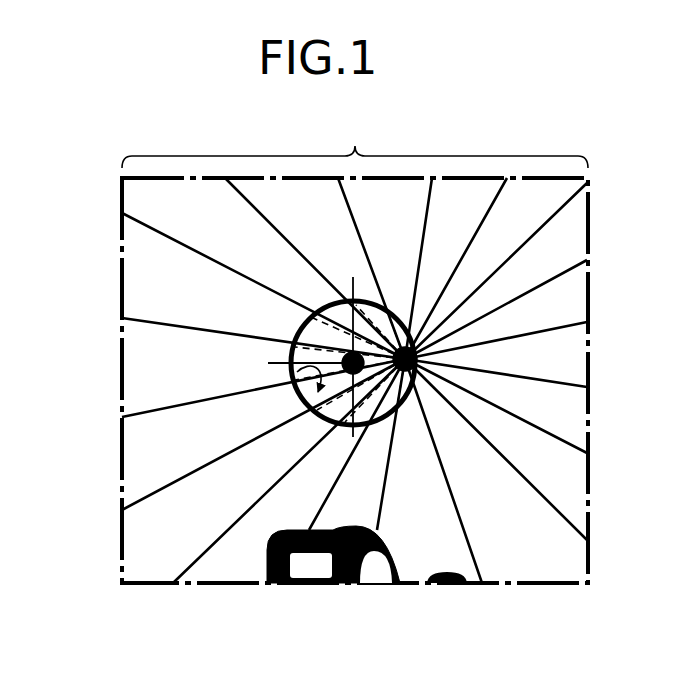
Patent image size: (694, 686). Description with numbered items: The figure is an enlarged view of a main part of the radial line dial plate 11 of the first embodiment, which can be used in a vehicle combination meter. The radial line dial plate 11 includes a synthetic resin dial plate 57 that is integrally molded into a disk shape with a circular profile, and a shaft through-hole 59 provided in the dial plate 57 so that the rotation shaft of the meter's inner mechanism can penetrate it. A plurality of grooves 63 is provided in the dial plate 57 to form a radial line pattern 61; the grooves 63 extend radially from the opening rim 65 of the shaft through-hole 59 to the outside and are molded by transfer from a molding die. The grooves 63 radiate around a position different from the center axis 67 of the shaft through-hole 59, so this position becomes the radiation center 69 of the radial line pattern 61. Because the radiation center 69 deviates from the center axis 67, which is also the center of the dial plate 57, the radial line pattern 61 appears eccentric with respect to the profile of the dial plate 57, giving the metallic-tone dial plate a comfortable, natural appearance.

The radial line dial plate 11 is at (118, 194).
The dial plate 57 is at (538, 570).
The shaft through-hole 59 is at (297, 372).
The radial line pattern 61 is at (355, 141).
The grooves 63 is at (221, 262).
The opening rim 65 is at (322, 410).
The center axis 67 is at (293, 350).
The radiation center 69 is at (405, 372).